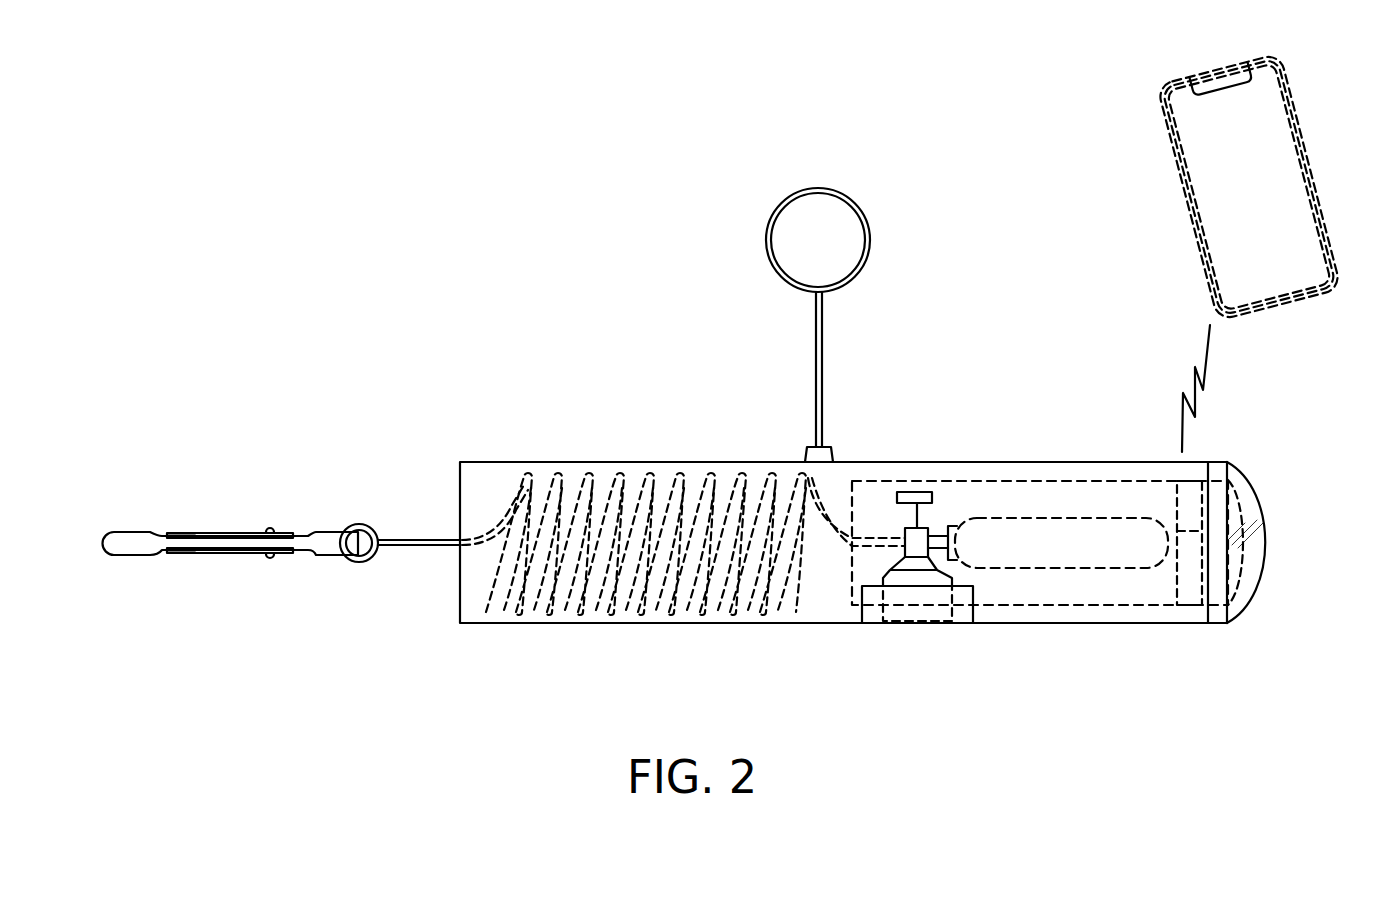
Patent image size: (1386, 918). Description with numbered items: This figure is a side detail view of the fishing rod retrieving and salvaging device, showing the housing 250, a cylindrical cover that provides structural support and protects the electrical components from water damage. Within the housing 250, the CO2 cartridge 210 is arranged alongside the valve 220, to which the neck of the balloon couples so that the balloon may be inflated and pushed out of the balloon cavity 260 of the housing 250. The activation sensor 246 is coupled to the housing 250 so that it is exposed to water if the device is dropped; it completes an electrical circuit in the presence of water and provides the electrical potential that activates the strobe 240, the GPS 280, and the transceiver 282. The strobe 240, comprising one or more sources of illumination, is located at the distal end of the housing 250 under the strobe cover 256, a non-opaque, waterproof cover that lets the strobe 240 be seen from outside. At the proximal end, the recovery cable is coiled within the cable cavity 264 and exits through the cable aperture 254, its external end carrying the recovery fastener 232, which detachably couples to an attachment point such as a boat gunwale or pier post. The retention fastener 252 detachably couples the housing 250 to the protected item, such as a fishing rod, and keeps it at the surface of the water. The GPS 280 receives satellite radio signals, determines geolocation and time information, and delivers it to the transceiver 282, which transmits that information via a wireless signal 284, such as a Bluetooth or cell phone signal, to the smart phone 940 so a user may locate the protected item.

The CO2 cartridge 210 is at (1063, 518).
The valve 220 is at (930, 530).
The recovery fastener 232 is at (328, 550).
The strobe 240 is at (1255, 603).
The activation sensor 246 is at (915, 492).
The housing 250 is at (830, 627).
The retention fastener 252 is at (868, 238).
The cable aperture 254 is at (458, 548).
The strobe cover 256 is at (1265, 542).
The balloon cavity 260 is at (972, 620).
The cable cavity 264 is at (797, 642).
The GPS 280 is at (1188, 603).
The transceiver 282 is at (1193, 498).
The wireless signal 284 is at (1195, 388).
The smart phone 940 is at (1167, 143).